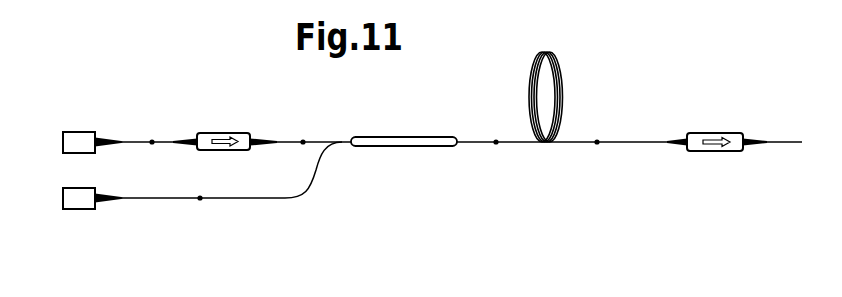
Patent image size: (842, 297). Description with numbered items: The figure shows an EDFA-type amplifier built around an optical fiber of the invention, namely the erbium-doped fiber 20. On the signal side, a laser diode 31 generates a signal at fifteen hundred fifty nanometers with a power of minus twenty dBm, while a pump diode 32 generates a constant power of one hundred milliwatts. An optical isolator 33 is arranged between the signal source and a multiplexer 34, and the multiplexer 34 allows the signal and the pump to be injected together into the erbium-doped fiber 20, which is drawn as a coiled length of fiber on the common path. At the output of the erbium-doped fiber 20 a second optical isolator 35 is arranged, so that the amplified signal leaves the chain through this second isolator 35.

The erbium-doped fiber 20 is at (562, 83).
The laser diode 31 is at (80, 131).
The pump diode 32 is at (80, 208).
The optical isolator 33 is at (223, 133).
The multiplexer 34 is at (408, 147).
The second optical isolator 35 is at (715, 133).